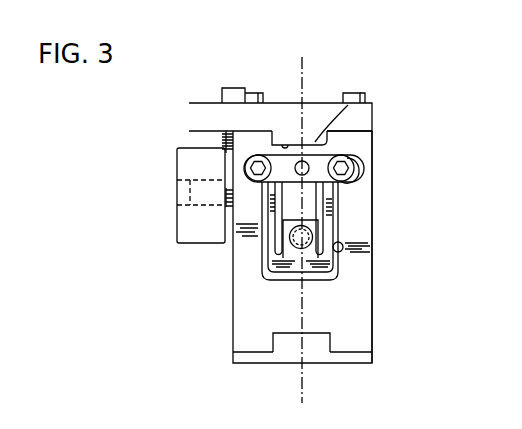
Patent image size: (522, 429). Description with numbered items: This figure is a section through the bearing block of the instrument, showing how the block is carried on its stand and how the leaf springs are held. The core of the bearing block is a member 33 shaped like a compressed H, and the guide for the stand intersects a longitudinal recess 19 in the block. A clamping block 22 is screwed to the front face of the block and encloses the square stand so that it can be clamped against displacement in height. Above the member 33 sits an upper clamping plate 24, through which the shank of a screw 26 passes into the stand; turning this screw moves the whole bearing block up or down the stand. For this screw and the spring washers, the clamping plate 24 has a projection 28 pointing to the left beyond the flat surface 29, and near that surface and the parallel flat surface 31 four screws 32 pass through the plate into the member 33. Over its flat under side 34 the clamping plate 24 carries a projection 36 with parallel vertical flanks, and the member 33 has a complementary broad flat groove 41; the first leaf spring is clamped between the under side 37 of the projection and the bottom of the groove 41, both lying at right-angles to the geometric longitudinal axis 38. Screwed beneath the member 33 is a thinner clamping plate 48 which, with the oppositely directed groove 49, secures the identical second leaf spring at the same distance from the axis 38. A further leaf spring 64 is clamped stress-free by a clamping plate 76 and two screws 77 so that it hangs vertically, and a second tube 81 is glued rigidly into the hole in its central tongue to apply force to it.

The longitudinal recess 19 is at (337, 253).
The clamping block 22 is at (188, 223).
The upper clamping plate 24 is at (268, 120).
The screw 26 is at (232, 90).
The projection 28 is at (198, 108).
The flat surface 29 is at (232, 292).
The flat surface 31 is at (372, 247).
The screws 32 is at (348, 93).
The member 33 is at (388, 172).
The flat under side 34 is at (205, 132).
The projection 36 is at (363, 92).
The under side 37 is at (284, 143).
The geometric longitudinal axis 38 is at (298, 389).
The groove 41 is at (372, 140).
The clamping plate 48 is at (333, 357).
The groove 49 is at (290, 337).
The leaf spring 64 is at (312, 260).
The clamping plate 76 is at (337, 187).
The screws 77 is at (247, 172).
The second tube 81 is at (297, 248).